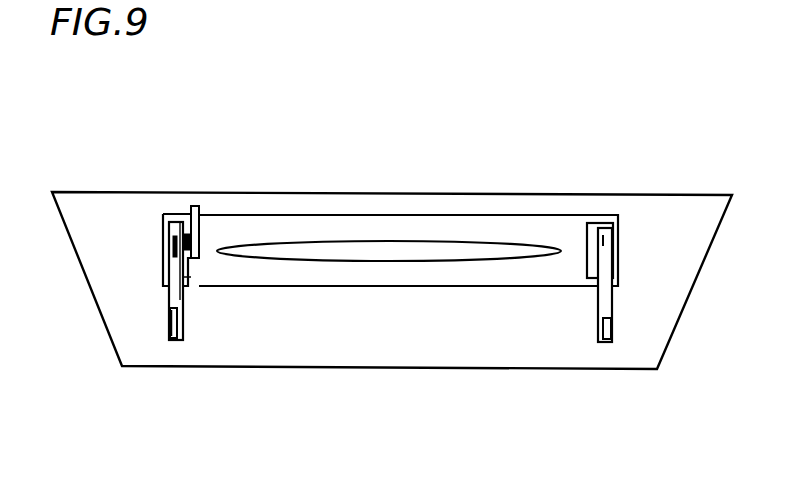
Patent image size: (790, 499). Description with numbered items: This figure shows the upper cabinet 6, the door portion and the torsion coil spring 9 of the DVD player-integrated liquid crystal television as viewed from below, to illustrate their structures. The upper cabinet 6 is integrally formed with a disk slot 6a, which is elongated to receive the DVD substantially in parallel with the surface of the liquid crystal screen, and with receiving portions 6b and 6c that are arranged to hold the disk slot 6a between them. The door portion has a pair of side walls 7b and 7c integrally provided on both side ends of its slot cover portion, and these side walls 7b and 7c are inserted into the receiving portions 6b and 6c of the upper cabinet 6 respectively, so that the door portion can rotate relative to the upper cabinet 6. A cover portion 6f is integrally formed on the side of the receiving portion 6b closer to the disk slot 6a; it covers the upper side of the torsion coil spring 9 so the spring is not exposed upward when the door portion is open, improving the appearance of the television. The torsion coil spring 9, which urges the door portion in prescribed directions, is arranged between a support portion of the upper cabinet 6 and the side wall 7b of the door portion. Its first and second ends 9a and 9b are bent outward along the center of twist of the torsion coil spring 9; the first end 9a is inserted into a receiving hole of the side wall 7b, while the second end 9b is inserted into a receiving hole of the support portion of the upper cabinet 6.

The upper cabinet 6 is at (125, 347).
The disk slot 6a is at (440, 243).
The receiving portion 6b is at (163, 235).
The receiving portion 6c is at (587, 235).
The cover portion 6f is at (186, 262).
The side wall 7b is at (174, 222).
The side wall 7c is at (603, 240).
The torsion coil spring 9 is at (189, 238).
The first end 9a is at (163, 266).
The second end 9b is at (199, 213).